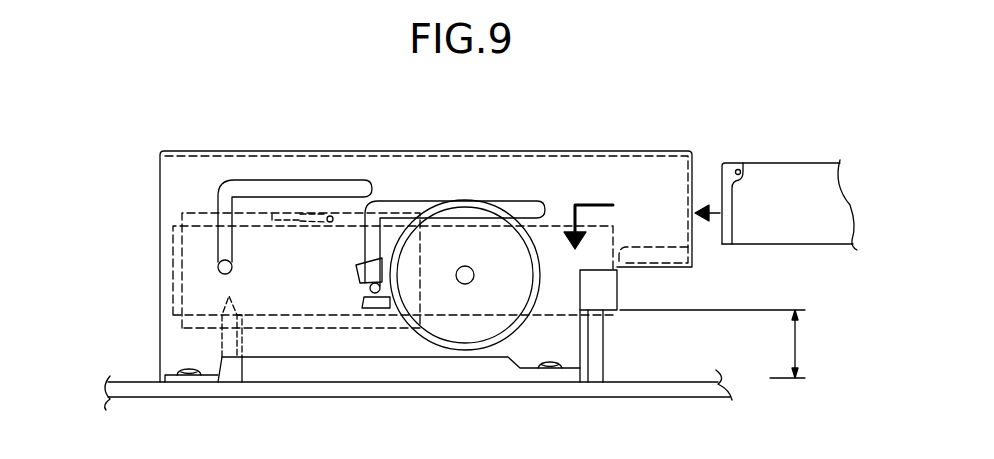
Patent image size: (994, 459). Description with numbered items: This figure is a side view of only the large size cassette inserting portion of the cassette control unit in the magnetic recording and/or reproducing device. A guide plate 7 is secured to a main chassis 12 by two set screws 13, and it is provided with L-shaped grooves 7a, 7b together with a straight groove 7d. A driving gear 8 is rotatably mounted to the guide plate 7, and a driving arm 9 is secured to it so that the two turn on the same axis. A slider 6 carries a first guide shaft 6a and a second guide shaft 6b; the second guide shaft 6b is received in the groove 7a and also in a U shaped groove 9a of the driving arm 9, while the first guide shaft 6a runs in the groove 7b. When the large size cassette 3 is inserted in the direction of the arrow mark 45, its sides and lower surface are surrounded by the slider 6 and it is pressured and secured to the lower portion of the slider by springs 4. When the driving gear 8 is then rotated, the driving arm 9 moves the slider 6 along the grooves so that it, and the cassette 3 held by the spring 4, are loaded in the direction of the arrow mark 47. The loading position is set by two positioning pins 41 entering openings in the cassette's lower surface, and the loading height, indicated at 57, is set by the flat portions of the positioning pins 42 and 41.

The large size cassette 3 is at (566, 302).
The spring for the large size cassette 4 is at (329, 215).
The slider 6 is at (182, 319).
The first guide shaft 6a is at (230, 271).
The second guide shaft 6b is at (368, 291).
The guide plate 7 is at (685, 170).
The L-shaped groove 7a is at (536, 205).
The L-shaped groove 7b is at (220, 193).
The straight groove 7d is at (663, 256).
The driving gear 8 is at (477, 333).
The driving arm 9 is at (377, 296).
The U shaped groove 9a is at (388, 308).
The main chassis 12 is at (700, 388).
The set screw 13 is at (197, 380).
The positioning pin 41 is at (232, 382).
The positioning pin 42 is at (601, 360).
The arrow mark 45 is at (719, 214).
The arrow mark 47 is at (592, 204).
The loading height position 57 is at (796, 366).